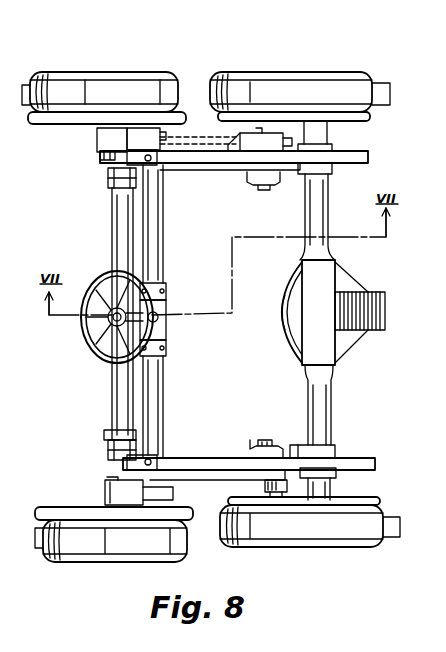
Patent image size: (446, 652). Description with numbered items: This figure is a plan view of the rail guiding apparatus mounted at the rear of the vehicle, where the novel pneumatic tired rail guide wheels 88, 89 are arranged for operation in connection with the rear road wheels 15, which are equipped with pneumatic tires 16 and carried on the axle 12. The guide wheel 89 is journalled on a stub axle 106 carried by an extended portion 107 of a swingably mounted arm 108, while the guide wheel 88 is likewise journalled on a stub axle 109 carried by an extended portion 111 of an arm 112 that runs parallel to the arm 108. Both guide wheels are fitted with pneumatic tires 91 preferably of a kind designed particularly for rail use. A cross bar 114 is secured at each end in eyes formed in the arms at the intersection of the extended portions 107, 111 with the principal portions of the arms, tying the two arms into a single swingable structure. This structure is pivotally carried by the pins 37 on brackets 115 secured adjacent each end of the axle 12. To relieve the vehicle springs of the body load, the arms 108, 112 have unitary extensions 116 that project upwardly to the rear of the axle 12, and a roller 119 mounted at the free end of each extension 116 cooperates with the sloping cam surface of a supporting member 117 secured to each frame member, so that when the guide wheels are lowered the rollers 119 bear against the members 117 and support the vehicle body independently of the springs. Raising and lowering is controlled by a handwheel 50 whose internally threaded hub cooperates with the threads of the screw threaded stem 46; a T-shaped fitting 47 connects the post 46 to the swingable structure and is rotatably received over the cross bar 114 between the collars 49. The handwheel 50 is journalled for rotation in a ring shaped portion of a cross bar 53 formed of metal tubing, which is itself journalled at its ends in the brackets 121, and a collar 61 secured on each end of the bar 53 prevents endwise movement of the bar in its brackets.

The axle 12 is at (320, 437).
The road wheels 15 is at (328, 537).
The pneumatic tires 16 is at (362, 524).
The pins 37 is at (268, 185).
The stem 46 is at (160, 320).
The T-shaped fitting 47 is at (166, 311).
The collars 49 is at (166, 350).
The handwheel 50 is at (88, 340).
The cross bar 53 is at (118, 384).
The collar 61 is at (136, 447).
The guide wheel 88 is at (142, 560).
The guide wheel 89 is at (85, 72).
The pneumatic tires 91 is at (56, 90).
The stub axle 106 is at (94, 126).
The extended portion 107 is at (127, 130).
The arm 108 is at (213, 141).
The stub axle 109 is at (335, 170).
The extended portion 111 is at (134, 495).
The arm 112 is at (196, 487).
The cross bar 114 is at (160, 407).
The brackets 115 is at (305, 455).
The extensions 116 is at (271, 492).
The supporting members 117 is at (258, 130).
The roller 119 is at (283, 494).
The brackets 121 is at (112, 176).